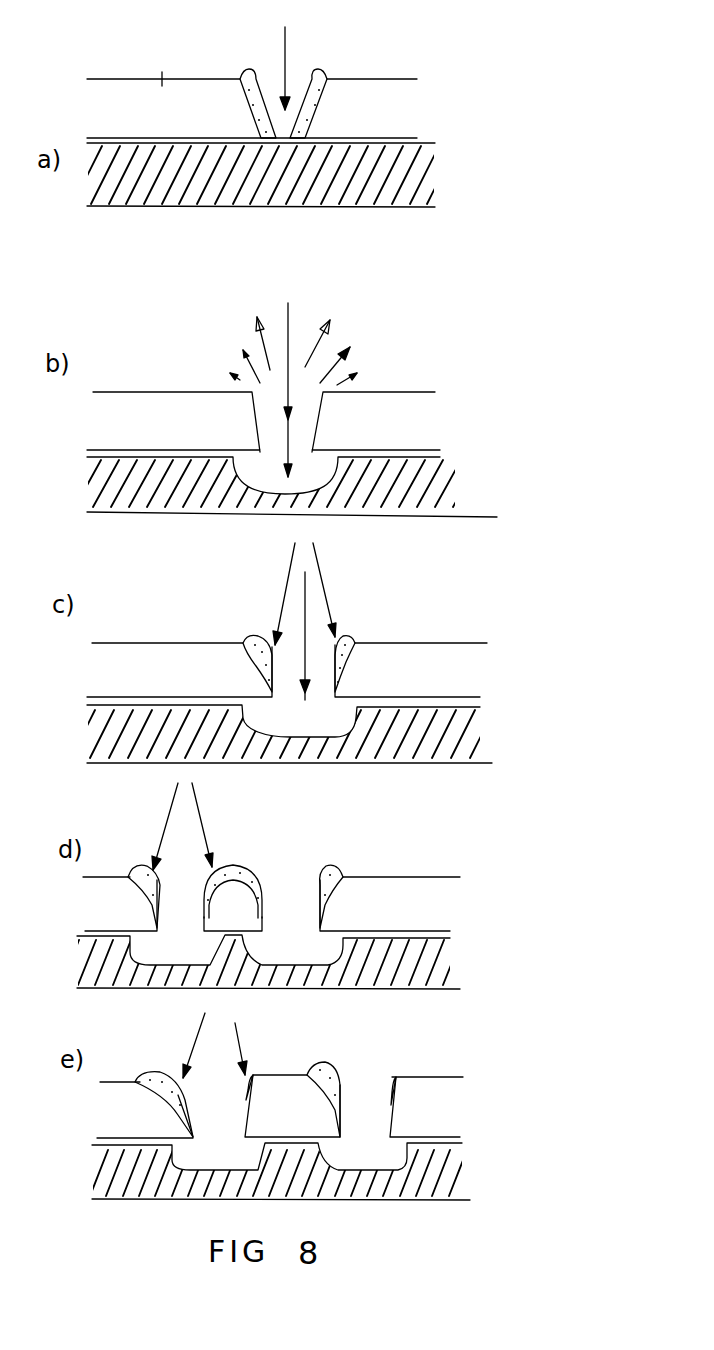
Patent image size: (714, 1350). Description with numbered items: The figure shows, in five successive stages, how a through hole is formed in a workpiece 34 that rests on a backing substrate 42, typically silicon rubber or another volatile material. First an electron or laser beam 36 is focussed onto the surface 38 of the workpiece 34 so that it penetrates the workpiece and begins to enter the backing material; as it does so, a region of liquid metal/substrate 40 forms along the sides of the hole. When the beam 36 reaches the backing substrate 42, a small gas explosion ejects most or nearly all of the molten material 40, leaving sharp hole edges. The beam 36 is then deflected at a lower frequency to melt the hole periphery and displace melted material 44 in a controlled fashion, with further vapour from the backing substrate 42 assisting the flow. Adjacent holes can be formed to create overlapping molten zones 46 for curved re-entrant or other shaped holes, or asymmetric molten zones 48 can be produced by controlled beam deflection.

The workpiece 34 is at (390, 90).
The electron or laser beam 36 is at (287, 44).
The surface of the workpiece 38 is at (170, 59).
The region of liquid metal/substrate 40 is at (323, 77).
The backing substrate 42 is at (427, 187).
The melted material 44 is at (247, 637).
The overlapping molten zones 46 is at (233, 863).
The asymmetric molten zones 48 is at (155, 1078).